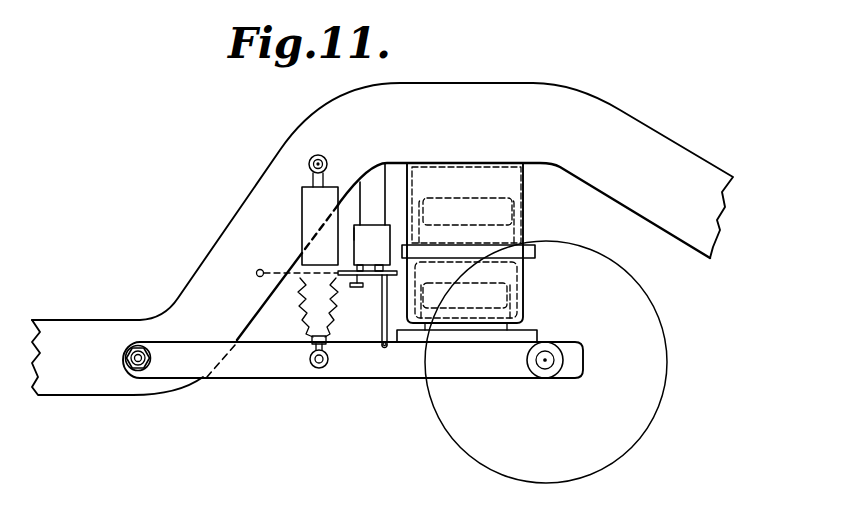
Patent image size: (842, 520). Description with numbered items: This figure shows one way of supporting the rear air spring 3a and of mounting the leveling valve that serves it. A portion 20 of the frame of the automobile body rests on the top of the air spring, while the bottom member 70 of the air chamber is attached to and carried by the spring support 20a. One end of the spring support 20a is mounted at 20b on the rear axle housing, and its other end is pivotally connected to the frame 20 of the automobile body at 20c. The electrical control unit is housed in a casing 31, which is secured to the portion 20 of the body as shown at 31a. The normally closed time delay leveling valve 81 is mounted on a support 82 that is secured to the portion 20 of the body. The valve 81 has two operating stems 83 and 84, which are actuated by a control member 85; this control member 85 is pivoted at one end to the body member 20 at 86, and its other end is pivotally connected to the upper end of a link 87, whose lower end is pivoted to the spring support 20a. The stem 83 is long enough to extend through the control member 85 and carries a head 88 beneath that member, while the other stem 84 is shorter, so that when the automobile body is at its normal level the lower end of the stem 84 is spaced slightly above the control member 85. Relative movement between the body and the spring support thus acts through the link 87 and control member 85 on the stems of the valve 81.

The portion of the frame of the automobile body 20 is at (382, 239).
The spring support 20a is at (270, 358).
The mounting on rear axle housing 20b is at (557, 348).
The pivotal connection 20c is at (128, 380).
The rear air spring 3a is at (528, 283).
The bottom member 70 is at (412, 335).
The casing 31 is at (305, 228).
The casing attachment 31a is at (310, 162).
The support 82 is at (368, 173).
The operating stem 84 is at (377, 265).
The time delay leveling valve 81 is at (358, 234).
The operating stem 83 is at (353, 268).
The pivot 86 is at (256, 276).
The head 88 is at (355, 291).
The control member 85 is at (382, 293).
The link 87 is at (380, 333).